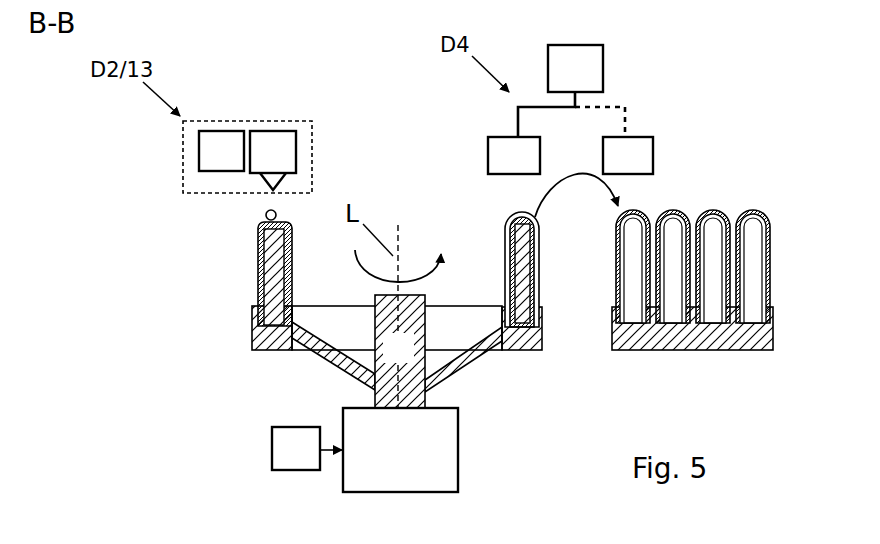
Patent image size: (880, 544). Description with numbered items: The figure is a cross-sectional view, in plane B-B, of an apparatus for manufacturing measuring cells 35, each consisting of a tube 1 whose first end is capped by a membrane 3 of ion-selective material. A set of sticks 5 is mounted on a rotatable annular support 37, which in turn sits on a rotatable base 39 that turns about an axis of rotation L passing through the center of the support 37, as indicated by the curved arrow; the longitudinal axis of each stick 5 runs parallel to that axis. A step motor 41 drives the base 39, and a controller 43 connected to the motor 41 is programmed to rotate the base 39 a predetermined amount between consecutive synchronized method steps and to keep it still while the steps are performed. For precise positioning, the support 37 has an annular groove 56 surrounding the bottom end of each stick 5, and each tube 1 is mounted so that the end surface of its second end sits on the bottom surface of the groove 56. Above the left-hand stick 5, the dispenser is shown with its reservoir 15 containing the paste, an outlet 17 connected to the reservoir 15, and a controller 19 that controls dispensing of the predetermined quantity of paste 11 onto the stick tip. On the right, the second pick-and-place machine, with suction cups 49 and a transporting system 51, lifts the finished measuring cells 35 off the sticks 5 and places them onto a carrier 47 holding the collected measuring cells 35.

The tube 1 is at (263, 267).
The membrane 3 is at (515, 213).
The stick 5 is at (275, 305).
The paste 11 is at (266, 216).
The reservoir 15 is at (286, 165).
The outlet 17 is at (276, 190).
The controller 19 is at (235, 165).
The measuring cell 35 is at (650, 221).
The rotatable annular support 37 is at (545, 350).
The rotatable base 39 is at (412, 363).
The step motor 41 is at (412, 463).
The controller 43 is at (310, 463).
The carrier 47 is at (697, 336).
The suction cup 49 is at (528, 171).
The transporting system 51 is at (589, 85).
The annular groove 56 is at (257, 317).